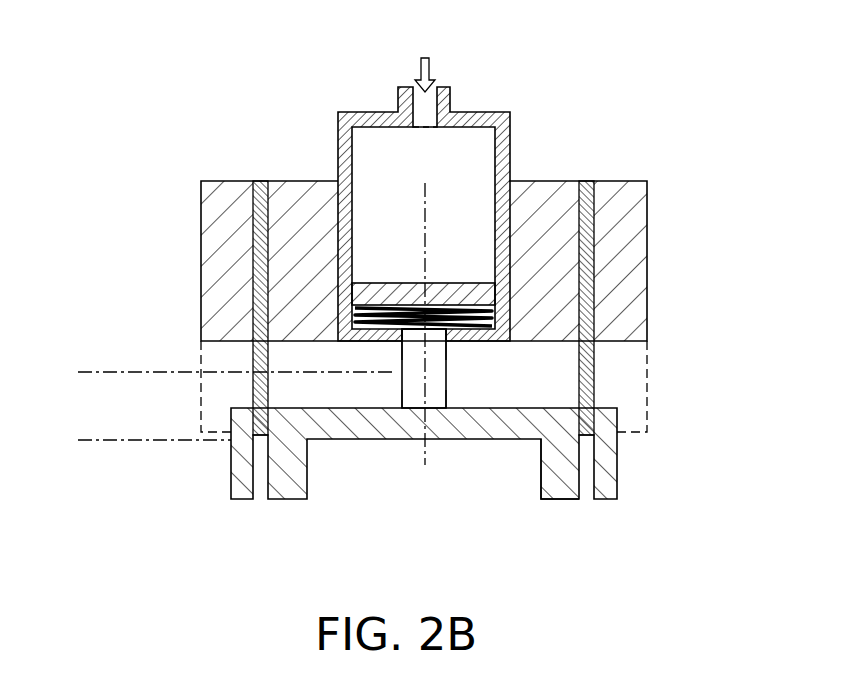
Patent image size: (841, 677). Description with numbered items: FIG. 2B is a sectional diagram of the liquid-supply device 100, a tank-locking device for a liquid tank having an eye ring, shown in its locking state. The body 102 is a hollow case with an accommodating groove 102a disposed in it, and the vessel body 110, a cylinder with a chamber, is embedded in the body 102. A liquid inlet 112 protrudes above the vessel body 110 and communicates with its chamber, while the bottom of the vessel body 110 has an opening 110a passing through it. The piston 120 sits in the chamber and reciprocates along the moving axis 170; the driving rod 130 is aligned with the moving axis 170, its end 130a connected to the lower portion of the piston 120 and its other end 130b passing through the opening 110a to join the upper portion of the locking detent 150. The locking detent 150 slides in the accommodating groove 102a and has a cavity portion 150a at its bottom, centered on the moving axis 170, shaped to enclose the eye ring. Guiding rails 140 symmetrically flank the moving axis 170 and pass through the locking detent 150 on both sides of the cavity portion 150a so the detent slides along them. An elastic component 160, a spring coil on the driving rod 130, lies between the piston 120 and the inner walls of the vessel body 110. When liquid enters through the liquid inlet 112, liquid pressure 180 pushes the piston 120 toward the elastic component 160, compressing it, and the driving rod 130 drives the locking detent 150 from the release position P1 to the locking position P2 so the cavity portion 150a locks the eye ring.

The liquid-supply device 100 is at (737, 593).
The body 102 is at (635, 203).
The accommodating groove 102a is at (637, 373).
The vessel body 110 is at (483, 118).
The opening 110a is at (446, 355).
The liquid inlet 112 is at (420, 101).
The piston 120 is at (340, 290).
The driving rod 130 is at (402, 380).
The end of driving rod 130a is at (398, 343).
The another end of driving rod 130b is at (403, 392).
The guiding rails 140 is at (593, 263).
The locking detent 150 is at (608, 453).
The cavity portion 150a is at (539, 469).
The elastic component 160 is at (352, 316).
The moving axis 170 is at (425, 183).
The liquid pressure 180 is at (430, 68).
The release position P1 is at (90, 373).
The locking position P2 is at (90, 441).